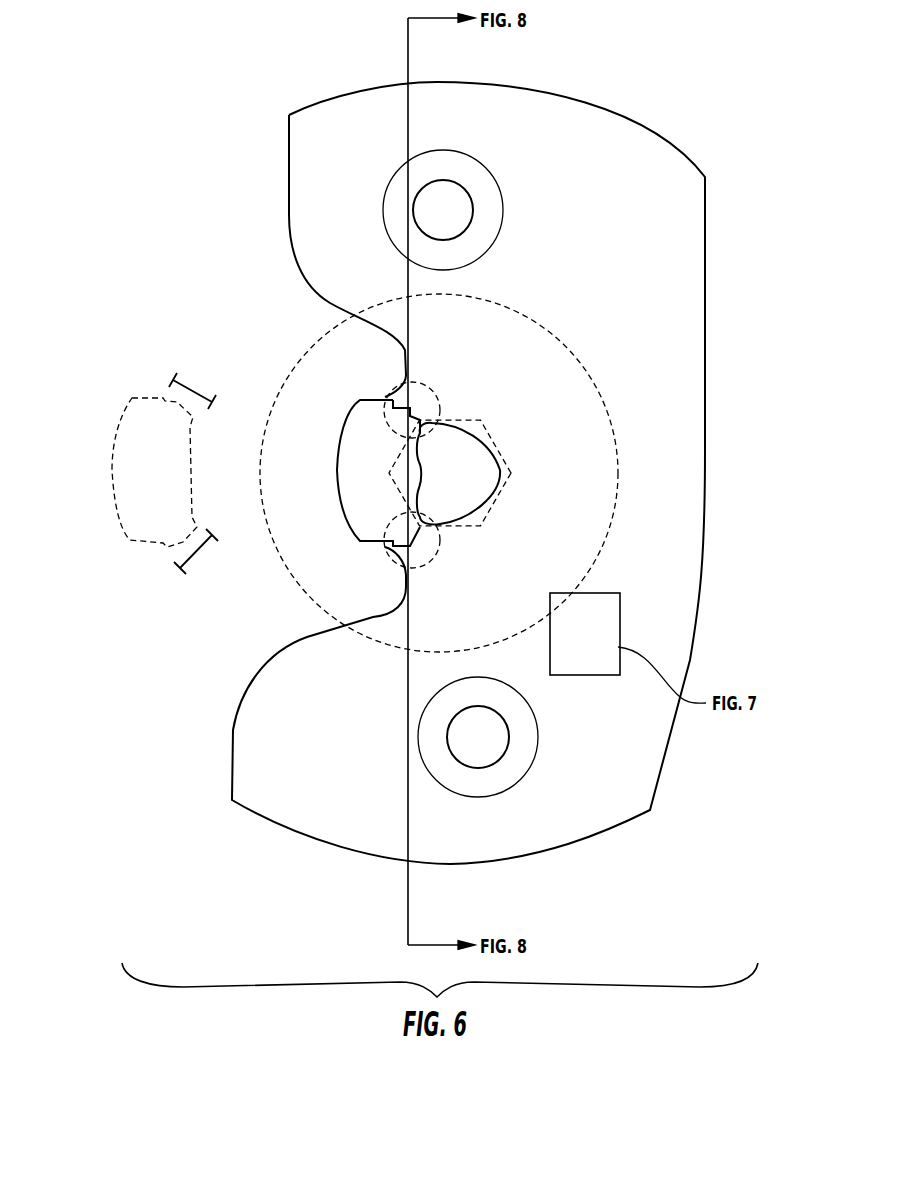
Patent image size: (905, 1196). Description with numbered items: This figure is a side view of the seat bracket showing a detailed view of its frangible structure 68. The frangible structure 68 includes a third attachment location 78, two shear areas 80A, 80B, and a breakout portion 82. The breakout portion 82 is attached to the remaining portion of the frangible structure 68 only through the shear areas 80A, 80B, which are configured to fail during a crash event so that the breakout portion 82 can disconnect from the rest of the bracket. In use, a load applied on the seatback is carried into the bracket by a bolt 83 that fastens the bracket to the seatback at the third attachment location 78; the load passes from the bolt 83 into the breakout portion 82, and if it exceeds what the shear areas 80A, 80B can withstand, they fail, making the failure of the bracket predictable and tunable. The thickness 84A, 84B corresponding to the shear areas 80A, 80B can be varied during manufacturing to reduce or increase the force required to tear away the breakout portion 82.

The frangible structure 68 is at (580, 360).
The third attachment location 78 is at (457, 430).
The shear area 80A is at (390, 382).
The shear area 80B is at (380, 555).
The breakout portion 82 is at (357, 467).
The bolt 83 is at (507, 482).
The thickness 84A is at (210, 403).
The thickness 84B is at (202, 550).